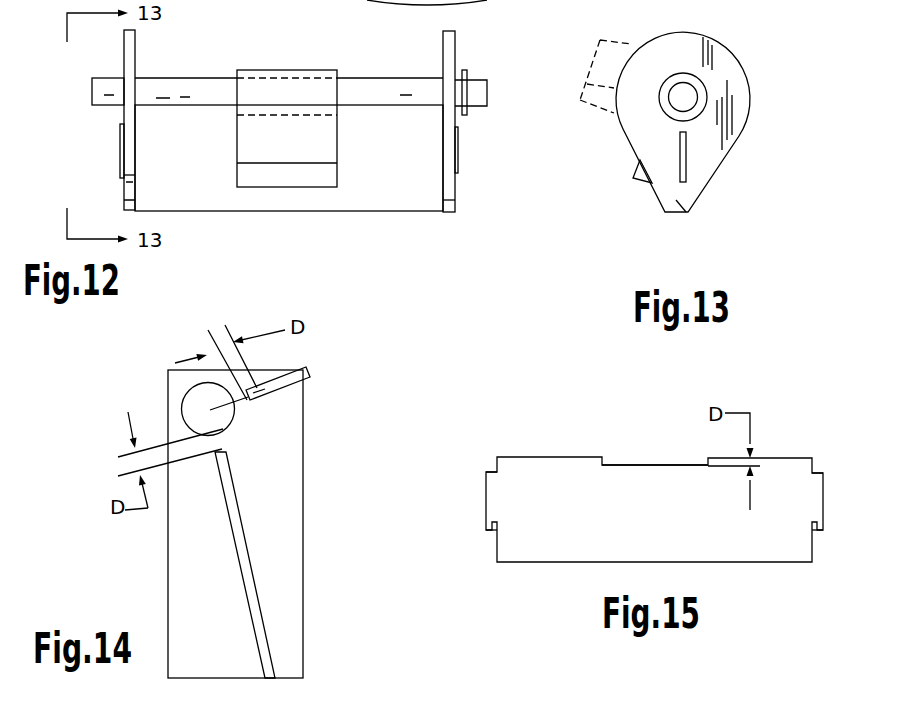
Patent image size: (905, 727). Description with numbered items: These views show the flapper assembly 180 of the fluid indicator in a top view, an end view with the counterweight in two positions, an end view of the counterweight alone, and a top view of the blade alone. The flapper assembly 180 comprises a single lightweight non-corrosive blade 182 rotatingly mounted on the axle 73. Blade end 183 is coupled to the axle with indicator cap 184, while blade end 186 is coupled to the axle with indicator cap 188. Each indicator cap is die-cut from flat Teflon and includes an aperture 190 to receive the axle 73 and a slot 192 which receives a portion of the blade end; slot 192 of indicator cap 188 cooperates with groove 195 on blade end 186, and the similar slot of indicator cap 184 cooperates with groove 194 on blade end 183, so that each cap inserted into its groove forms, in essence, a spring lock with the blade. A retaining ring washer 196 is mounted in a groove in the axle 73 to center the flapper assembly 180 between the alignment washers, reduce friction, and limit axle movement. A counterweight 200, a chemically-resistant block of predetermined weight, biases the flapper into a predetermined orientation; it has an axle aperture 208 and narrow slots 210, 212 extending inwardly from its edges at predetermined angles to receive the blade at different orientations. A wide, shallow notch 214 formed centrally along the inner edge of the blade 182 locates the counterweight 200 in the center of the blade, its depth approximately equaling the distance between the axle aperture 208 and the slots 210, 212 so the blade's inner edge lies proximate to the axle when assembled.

In FIG. 12, the axle 73 is at (188, 77).
In FIG. 13, the axle 73 is at (681, 92).
In FIG. 12, the flapper assembly 180 is at (384, 216).
In FIG. 13, the flapper assembly 180 is at (736, 155).
In FIG. 12, the blade 182 is at (211, 190).
In FIG. 13, the blade 182 is at (676, 195).
In FIG. 15, the blade 182 is at (707, 540).
In FIG. 12, the blade end 183 is at (458, 178).
In FIG. 15, the blade end 183 is at (483, 487).
In FIG. 12, the indicator cap 184 is at (455, 212).
In FIG. 12, the blade end 186 is at (120, 150).
In FIG. 15, the blade end 186 is at (824, 507).
In FIG. 12, the indicator cap 188 is at (124, 205).
In FIG. 13, the indicator cap 188 is at (732, 107).
In FIG. 13, the aperture 190 is at (703, 82).
In FIG. 13, the slot 192 is at (688, 158).
In FIG. 12, the groove 194 is at (455, 190).
In FIG. 15, the groove 194 is at (494, 528).
In FIG. 12, the groove 195 is at (124, 175).
In FIG. 15, the groove 195 is at (814, 532).
In FIG. 12, the retaining ring washer 196 is at (464, 115).
In FIG. 12, the counterweight 200 is at (311, 192).
In FIG. 13, the counterweight 200 is at (641, 184).
In FIG. 14, the counterweight 200 is at (321, 443).
In FIG. 14, the axle aperture 208 is at (180, 398).
In FIG. 14, the slot 210 is at (277, 375).
In FIG. 14, the slot 212 is at (240, 527).
In FIG. 15, the notch 214 is at (630, 462).